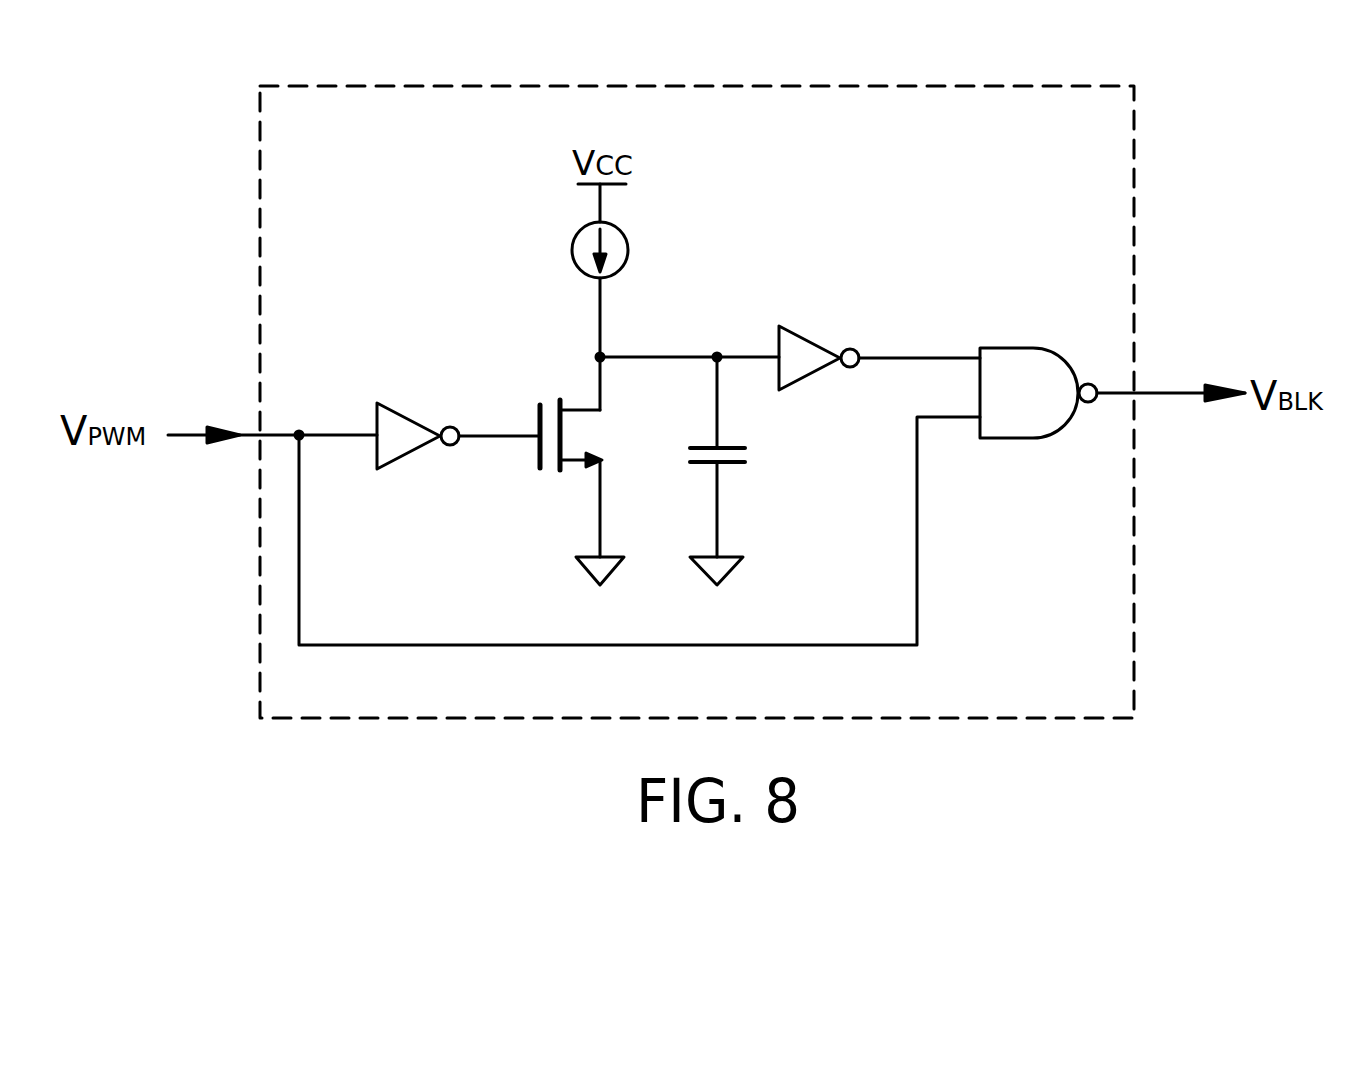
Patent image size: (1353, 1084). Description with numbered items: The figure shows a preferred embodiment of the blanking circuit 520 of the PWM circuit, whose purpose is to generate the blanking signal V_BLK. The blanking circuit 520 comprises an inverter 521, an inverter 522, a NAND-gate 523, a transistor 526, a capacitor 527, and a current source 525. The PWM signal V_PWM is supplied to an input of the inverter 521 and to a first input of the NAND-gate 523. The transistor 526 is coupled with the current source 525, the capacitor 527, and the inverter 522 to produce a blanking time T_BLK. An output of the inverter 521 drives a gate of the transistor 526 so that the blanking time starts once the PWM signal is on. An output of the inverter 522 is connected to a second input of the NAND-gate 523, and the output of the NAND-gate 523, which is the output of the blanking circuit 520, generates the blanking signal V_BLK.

The blanking circuit 520 is at (1135, 157).
The inverter 521 is at (413, 402).
The inverter 522 is at (816, 338).
The NAND-gate 523 is at (1018, 340).
The current source 525 is at (629, 250).
The transistor 526 is at (548, 478).
The capacitor 527 is at (753, 458).